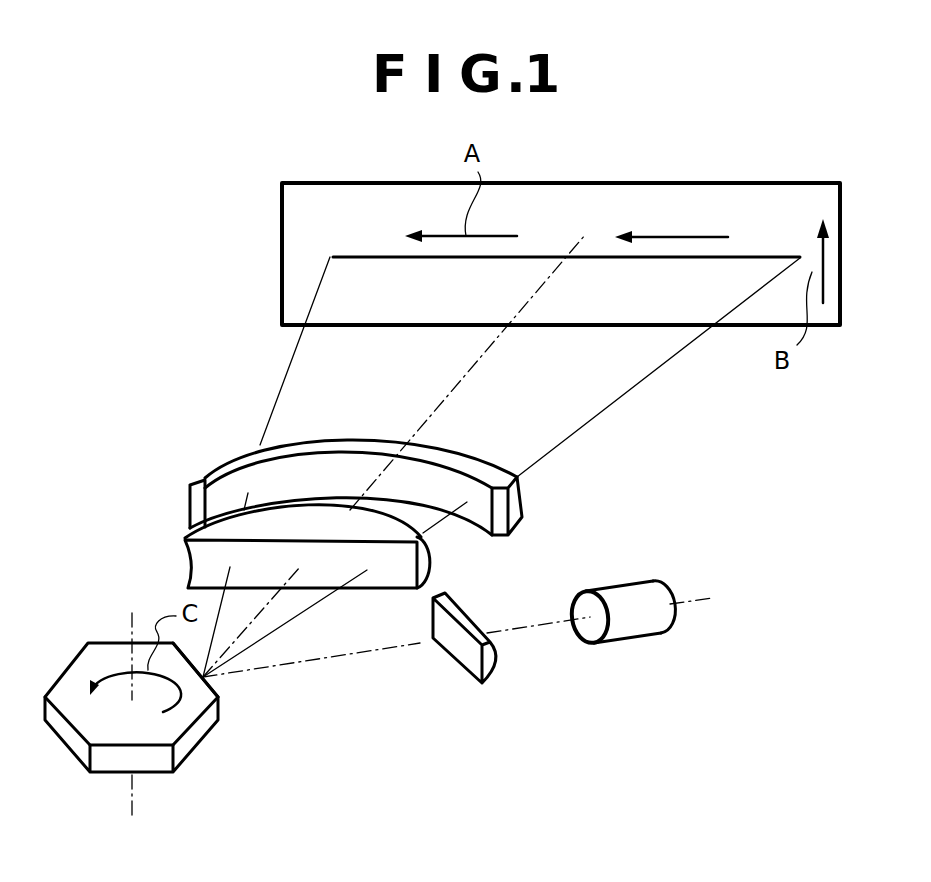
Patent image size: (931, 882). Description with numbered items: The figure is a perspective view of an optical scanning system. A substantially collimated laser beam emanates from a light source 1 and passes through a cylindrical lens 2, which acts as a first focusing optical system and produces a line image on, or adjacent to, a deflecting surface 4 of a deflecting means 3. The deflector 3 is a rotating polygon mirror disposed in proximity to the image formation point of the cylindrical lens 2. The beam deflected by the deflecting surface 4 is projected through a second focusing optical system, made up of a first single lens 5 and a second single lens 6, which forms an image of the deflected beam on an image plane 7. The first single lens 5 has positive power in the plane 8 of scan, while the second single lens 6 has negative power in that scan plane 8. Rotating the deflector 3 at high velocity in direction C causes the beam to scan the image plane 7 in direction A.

The light source 1 is at (637, 623).
The cylindrical lens 2 is at (463, 653).
The deflecting means 3 is at (95, 652).
The deflecting surface 4 is at (212, 690).
The first single lens 5 is at (237, 533).
The second single lens 6 is at (232, 465).
The image plane 7 is at (305, 252).
The plane of scan 8 is at (593, 392).